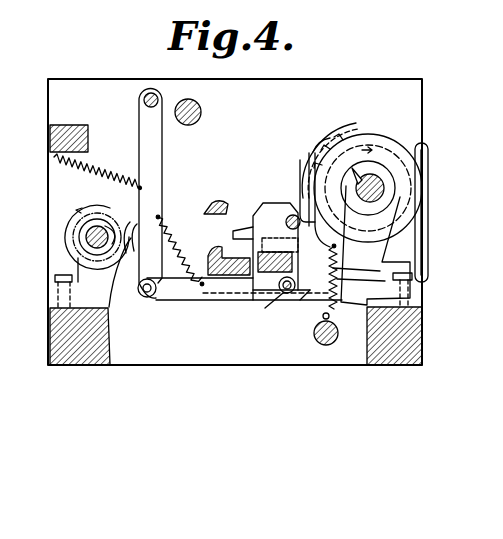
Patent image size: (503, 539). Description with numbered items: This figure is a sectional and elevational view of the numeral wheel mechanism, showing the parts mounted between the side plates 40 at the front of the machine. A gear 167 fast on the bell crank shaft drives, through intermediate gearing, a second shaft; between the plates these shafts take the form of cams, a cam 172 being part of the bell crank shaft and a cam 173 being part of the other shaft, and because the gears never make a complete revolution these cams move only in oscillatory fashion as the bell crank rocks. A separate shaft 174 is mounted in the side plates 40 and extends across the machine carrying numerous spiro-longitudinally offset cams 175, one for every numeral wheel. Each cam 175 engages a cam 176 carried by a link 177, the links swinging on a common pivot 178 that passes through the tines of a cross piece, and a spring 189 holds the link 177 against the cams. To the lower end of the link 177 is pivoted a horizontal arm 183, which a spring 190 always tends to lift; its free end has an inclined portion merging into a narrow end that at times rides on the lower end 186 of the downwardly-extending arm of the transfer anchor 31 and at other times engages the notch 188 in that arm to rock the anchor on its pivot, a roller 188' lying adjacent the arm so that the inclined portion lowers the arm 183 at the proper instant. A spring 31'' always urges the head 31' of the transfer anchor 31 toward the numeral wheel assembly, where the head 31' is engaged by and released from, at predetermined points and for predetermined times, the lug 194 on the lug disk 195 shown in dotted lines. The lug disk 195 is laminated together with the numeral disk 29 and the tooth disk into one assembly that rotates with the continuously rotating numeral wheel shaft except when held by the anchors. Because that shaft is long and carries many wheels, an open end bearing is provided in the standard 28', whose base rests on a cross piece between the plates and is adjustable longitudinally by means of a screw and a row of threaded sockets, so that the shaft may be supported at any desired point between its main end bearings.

The side plate 40 is at (353, 86).
The common pivot 178 is at (149, 94).
The link 177 is at (142, 138).
The spring 189 is at (75, 171).
The shaft 174 is at (95, 232).
The cam 176 is at (131, 272).
The cam 175 is at (128, 220).
The cam 173 is at (215, 204).
The spring 190 is at (186, 268).
The horizontal arm 183 is at (181, 290).
The cam 172 is at (238, 262).
The lug 188' is at (263, 321).
The notch 188 is at (264, 336).
The lower end 186 is at (296, 310).
The gear 167 is at (363, 287).
The numeral disk 29 is at (362, 138).
The lug disk 195 is at (408, 192).
The standard 28' is at (427, 252).
The spring 31'' is at (389, 263).
The transfer anchor 31 is at (292, 200).
The head 31' is at (313, 135).
The lug 194 is at (307, 163).